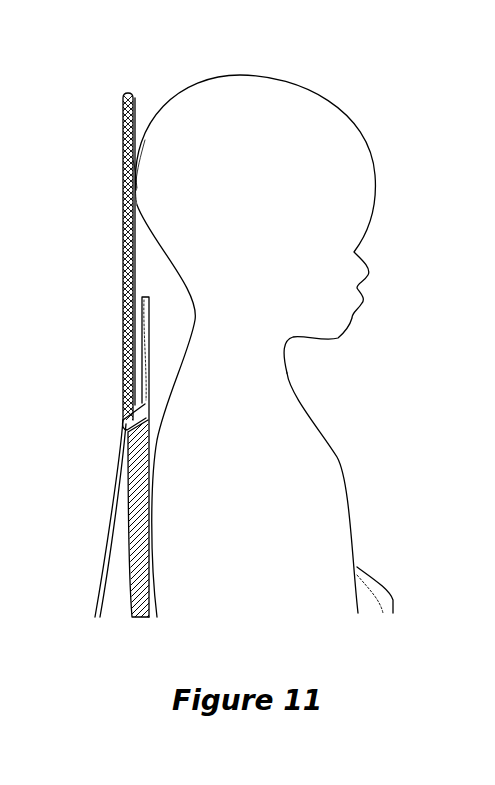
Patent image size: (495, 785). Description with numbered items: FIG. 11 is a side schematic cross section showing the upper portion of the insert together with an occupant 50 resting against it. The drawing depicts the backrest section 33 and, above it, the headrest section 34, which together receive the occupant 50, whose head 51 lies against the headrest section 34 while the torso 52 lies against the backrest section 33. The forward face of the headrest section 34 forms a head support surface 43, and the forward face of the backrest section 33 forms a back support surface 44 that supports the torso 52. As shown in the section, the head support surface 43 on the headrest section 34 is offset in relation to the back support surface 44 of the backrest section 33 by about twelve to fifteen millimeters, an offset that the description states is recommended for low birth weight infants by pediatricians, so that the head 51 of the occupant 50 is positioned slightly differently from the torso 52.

The backrest section 33 is at (133, 553).
The headrest section 34 is at (120, 140).
The head support surface 43 is at (137, 188).
The back support surface 44 is at (152, 512).
The occupant 50 is at (382, 387).
The head 51 is at (348, 180).
The torso 52 is at (315, 540).